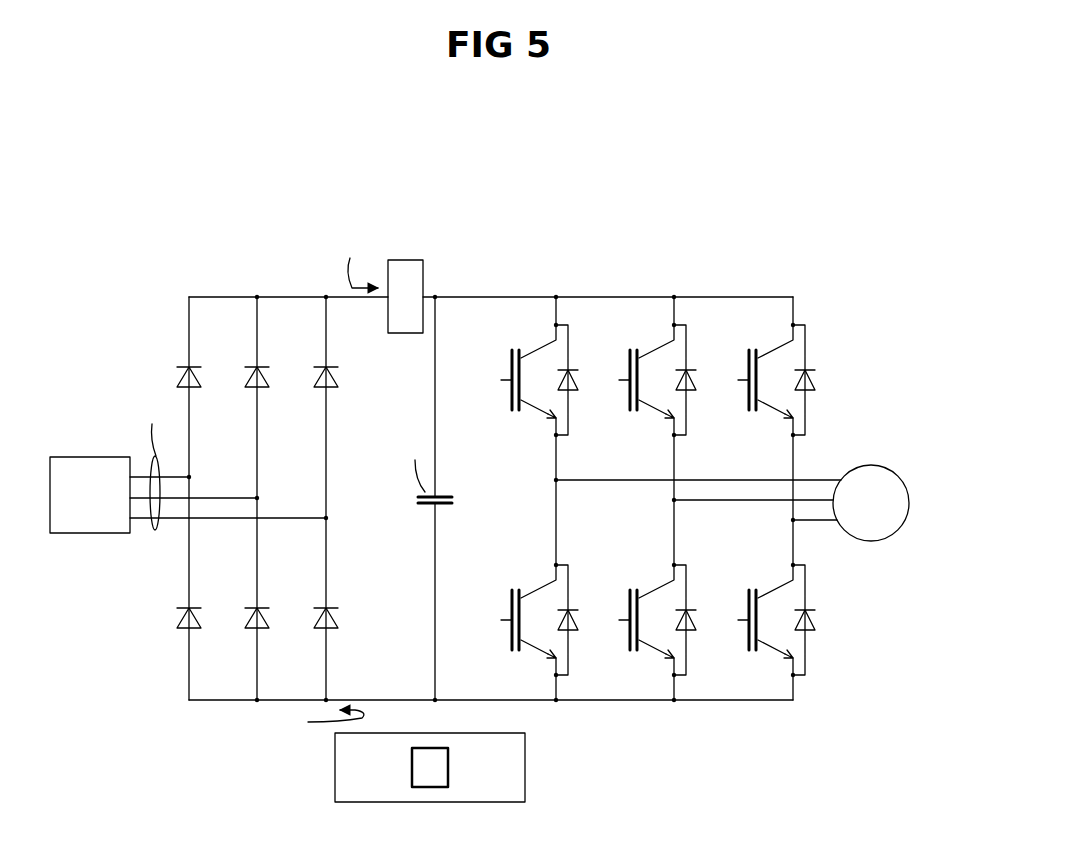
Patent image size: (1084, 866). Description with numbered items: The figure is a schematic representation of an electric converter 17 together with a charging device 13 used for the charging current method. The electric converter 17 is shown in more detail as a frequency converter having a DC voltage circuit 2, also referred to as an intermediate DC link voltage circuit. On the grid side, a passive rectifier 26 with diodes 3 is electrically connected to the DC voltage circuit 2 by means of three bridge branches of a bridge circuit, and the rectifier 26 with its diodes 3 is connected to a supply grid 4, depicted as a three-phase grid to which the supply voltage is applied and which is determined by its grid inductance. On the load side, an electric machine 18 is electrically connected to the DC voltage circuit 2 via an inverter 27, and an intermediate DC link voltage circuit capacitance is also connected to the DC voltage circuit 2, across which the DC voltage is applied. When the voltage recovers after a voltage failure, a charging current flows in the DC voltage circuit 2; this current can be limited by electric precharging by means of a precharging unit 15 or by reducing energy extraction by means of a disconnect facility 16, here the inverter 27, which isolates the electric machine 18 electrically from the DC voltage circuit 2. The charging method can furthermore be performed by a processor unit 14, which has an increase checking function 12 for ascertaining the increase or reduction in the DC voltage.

The DC voltage circuit 2 is at (367, 300).
The diodes 3 is at (184, 362).
The supply grid 4 is at (88, 456).
The increase checking function 12 is at (450, 768).
The charging device 13 is at (190, 213).
The processor unit 14 is at (527, 765).
The precharging unit 15 is at (406, 258).
The disconnect facility 16 is at (672, 278).
The electric converter 17 is at (520, 222).
The electric machine 18 is at (870, 462).
The rectifier 26 is at (250, 268).
The inverter 27 is at (658, 498).